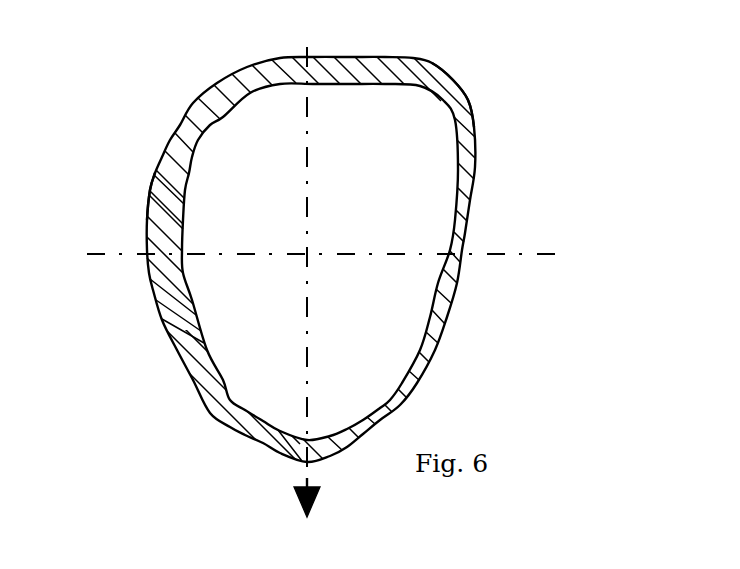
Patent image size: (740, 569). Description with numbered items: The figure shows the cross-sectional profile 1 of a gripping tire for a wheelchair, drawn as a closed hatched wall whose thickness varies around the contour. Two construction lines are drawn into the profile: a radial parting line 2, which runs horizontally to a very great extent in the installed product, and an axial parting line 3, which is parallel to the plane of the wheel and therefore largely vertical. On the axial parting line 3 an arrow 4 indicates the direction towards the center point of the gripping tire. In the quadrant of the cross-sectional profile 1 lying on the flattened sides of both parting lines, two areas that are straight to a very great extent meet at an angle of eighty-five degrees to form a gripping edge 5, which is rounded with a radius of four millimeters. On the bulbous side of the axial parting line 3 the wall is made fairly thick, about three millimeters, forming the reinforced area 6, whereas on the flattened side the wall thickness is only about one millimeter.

The cross-sectional profile 1 is at (547, 188).
The radial parting line 2 is at (543, 255).
The axial parting line 3 is at (307, 30).
The direction towards the center point of the gripping tire 4 is at (301, 511).
The gripping edge 5 is at (463, 80).
The reinforced area 6 is at (164, 224).